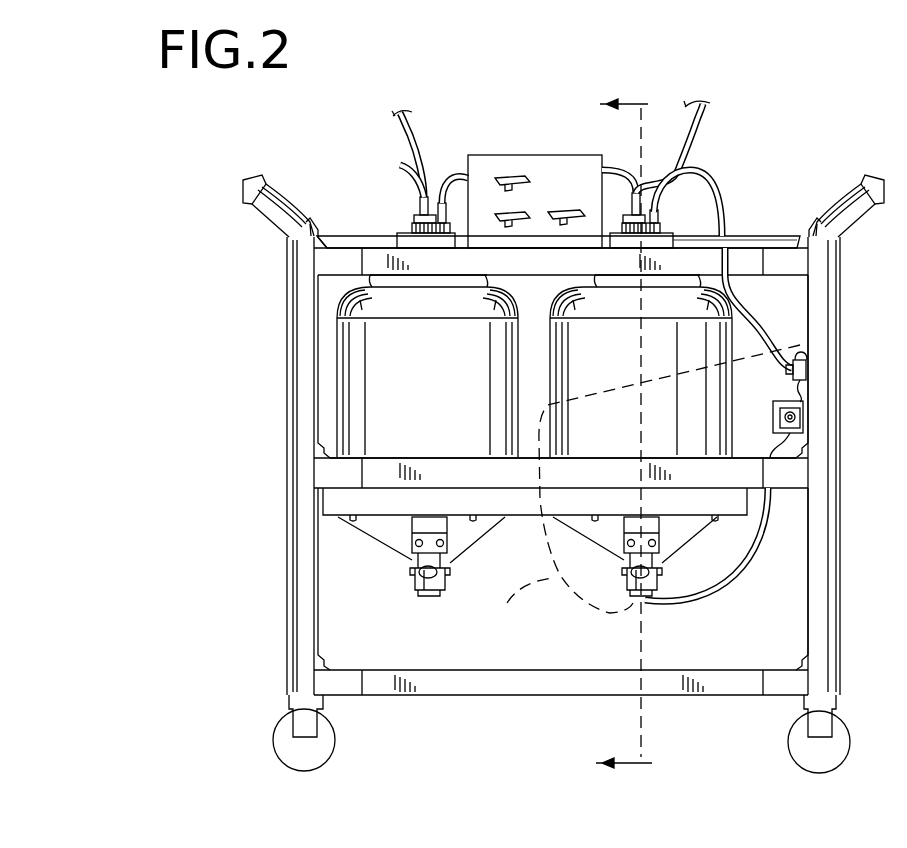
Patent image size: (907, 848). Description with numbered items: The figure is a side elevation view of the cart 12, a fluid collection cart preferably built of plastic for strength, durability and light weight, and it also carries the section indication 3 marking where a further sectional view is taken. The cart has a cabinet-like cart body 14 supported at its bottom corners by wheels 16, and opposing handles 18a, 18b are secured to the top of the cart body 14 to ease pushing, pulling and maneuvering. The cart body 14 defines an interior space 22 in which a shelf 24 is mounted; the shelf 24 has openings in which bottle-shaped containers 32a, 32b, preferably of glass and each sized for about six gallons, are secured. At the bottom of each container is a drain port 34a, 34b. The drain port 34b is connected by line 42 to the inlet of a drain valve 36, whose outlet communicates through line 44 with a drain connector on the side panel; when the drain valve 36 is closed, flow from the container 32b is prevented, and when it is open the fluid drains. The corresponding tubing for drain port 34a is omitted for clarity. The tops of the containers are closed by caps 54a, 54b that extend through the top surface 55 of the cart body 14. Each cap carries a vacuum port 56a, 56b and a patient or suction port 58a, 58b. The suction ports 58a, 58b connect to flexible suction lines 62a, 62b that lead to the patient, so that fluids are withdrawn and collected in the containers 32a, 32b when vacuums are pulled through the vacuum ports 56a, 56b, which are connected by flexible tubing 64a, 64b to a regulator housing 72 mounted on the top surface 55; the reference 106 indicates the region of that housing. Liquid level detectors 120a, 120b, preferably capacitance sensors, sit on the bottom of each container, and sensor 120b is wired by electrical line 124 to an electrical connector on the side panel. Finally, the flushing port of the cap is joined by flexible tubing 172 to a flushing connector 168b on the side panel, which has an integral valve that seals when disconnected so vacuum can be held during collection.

The cart 12 is at (250, 254).
The cart body 14 is at (287, 470).
The wheels 16 is at (278, 750).
The handle 18a is at (262, 178).
The handle 18b is at (868, 182).
The interior space 22 is at (330, 298).
The shelf 24 is at (398, 470).
The container 32a is at (447, 377).
The container 32b is at (615, 367).
The drain port 34a is at (430, 596).
The drain port 34b is at (655, 598).
The drain valve 36 is at (805, 418).
The line 42 is at (735, 613).
The line 44 is at (790, 380).
The cap 54a is at (405, 232).
The cap 54b is at (670, 230).
The top surface 55 is at (740, 247).
The vacuum port 56a is at (417, 210).
The vacuum port 56b is at (632, 205).
The suction port 58a is at (462, 178).
The suction port 58b is at (708, 153).
The suction line 62a is at (417, 143).
The suction line 62b is at (702, 120).
The flexible tubing 64a is at (427, 190).
The flexible tubing 64b is at (662, 173).
The regulator housing 72 is at (530, 155).
The panel face 106 is at (557, 172).
The liquid level detector 120a is at (415, 565).
The liquid level detector 120b is at (659, 566).
The electrical line 124 is at (645, 485).
The flushing connector 168b is at (800, 358).
The flexible tubing 172 is at (730, 202).
The section line 3 is at (624, 435).